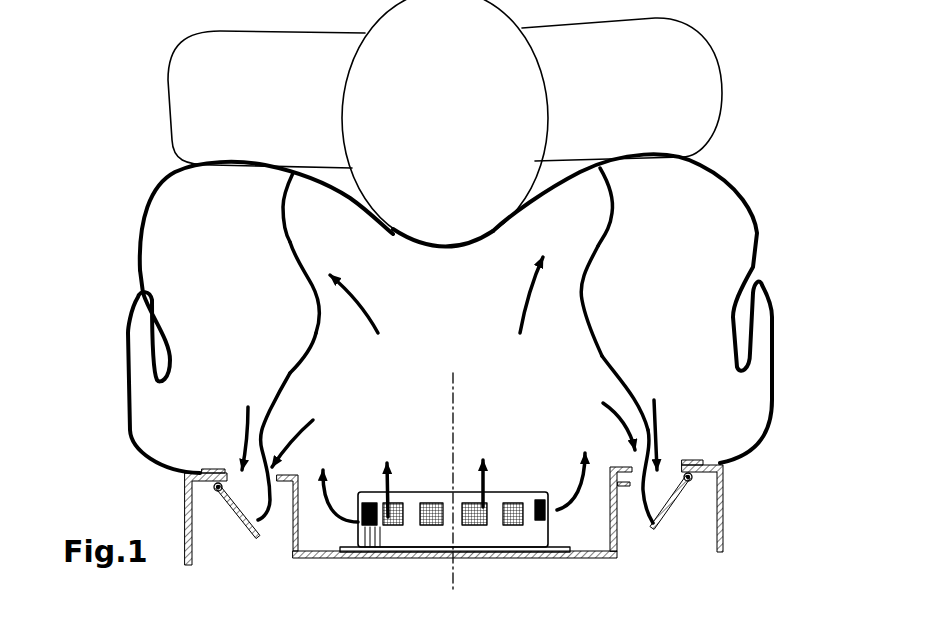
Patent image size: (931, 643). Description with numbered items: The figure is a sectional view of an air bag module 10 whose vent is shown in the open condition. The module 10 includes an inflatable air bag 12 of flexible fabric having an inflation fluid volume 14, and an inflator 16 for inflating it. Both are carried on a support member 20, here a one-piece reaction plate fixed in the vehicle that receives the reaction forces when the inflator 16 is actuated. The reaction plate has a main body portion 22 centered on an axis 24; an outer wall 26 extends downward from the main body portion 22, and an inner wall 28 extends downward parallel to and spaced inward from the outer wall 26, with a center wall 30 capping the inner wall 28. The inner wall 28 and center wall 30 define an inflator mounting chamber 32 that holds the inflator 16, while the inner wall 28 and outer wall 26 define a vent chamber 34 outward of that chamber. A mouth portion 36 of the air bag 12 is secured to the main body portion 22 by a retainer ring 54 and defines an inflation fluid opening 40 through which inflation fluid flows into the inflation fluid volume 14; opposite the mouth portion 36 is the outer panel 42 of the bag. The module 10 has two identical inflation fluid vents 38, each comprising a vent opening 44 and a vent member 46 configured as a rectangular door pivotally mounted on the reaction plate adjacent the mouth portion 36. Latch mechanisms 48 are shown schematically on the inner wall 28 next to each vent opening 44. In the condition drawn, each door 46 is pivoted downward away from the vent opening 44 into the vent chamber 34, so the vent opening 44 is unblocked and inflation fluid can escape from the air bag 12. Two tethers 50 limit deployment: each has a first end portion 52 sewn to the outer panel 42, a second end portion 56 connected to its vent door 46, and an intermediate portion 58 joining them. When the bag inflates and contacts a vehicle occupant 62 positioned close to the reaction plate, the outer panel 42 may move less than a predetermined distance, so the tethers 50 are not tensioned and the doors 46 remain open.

The air bag module 10 is at (394, 374).
The air bag 12 is at (128, 397).
The inflation fluid volume 14 is at (163, 227).
The inflator 16 is at (433, 492).
The support member 20 is at (727, 533).
The main body portion 22 is at (297, 472).
The axis 24 is at (453, 568).
The outer wall 26 is at (185, 520).
The inner wall 28 is at (300, 527).
The center wall 30 is at (587, 560).
The inflator mounting chamber 32 is at (582, 527).
The vent chamber 34 is at (692, 518).
The mouth portion 36 is at (717, 463).
The inflation fluid vent 38 is at (235, 553).
The inflation fluid opening 40 is at (562, 482).
The outer panel 42 is at (493, 237).
The vent opening 44 is at (250, 487).
The vent member 46 is at (255, 533).
The latch mechanism 48 is at (282, 510).
The tether 50 is at (308, 333).
The first end portion 52 is at (283, 203).
The retainer ring 54 is at (217, 477).
The second end portion 56 is at (277, 490).
The intermediate portion 58 is at (290, 373).
The vehicle occupant 62 is at (182, 77).